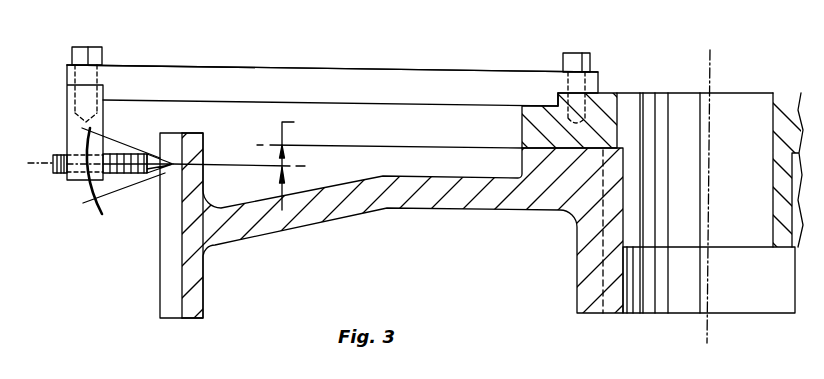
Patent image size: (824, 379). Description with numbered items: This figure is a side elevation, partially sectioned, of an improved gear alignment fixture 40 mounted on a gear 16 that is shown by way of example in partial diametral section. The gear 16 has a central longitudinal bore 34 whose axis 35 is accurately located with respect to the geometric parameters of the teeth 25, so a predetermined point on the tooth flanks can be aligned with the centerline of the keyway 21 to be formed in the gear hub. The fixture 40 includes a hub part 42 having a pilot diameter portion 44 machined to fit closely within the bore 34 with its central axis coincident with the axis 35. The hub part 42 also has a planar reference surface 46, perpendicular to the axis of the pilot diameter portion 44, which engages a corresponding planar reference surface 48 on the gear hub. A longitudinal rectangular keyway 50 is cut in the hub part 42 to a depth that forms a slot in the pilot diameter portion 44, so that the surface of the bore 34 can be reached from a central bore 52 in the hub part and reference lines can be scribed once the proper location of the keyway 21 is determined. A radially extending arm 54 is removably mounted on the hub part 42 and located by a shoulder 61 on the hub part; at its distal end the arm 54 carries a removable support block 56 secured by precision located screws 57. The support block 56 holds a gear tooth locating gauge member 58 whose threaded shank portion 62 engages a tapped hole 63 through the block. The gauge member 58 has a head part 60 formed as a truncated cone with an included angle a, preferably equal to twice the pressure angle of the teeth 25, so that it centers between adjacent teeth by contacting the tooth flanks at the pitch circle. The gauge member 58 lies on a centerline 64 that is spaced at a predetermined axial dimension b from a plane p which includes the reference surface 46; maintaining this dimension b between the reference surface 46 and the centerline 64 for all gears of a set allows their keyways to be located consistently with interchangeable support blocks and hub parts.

The gear 16 is at (443, 209).
The keyway 21 is at (603, 315).
The teeth 25 is at (160, 302).
The central longitudinal bore 34 is at (623, 290).
The axis 35 is at (708, 327).
The alignment fixture 40 is at (512, 70).
The hub part 42 is at (627, 93).
The pilot diameter portion 44 is at (620, 247).
The planar reference surface 46 is at (543, 155).
The planar reference surface 48 is at (598, 136).
The longitudinal rectangular keyway 50 is at (633, 193).
The central bore 52 is at (773, 117).
The radially extending arm 54 is at (355, 70).
The removable support block 56 is at (67, 115).
The screws 57 is at (72, 60).
The gear tooth locating gauge member 58 is at (118, 153).
The head part 60 is at (152, 157).
The shoulder 61 is at (557, 98).
The threaded shank portion 62 is at (53, 172).
The tapped hole 63 is at (67, 157).
The centerline 64 is at (218, 166).
The included angle a is at (102, 214).
The dimension b is at (296, 161).
The plane p is at (425, 145).